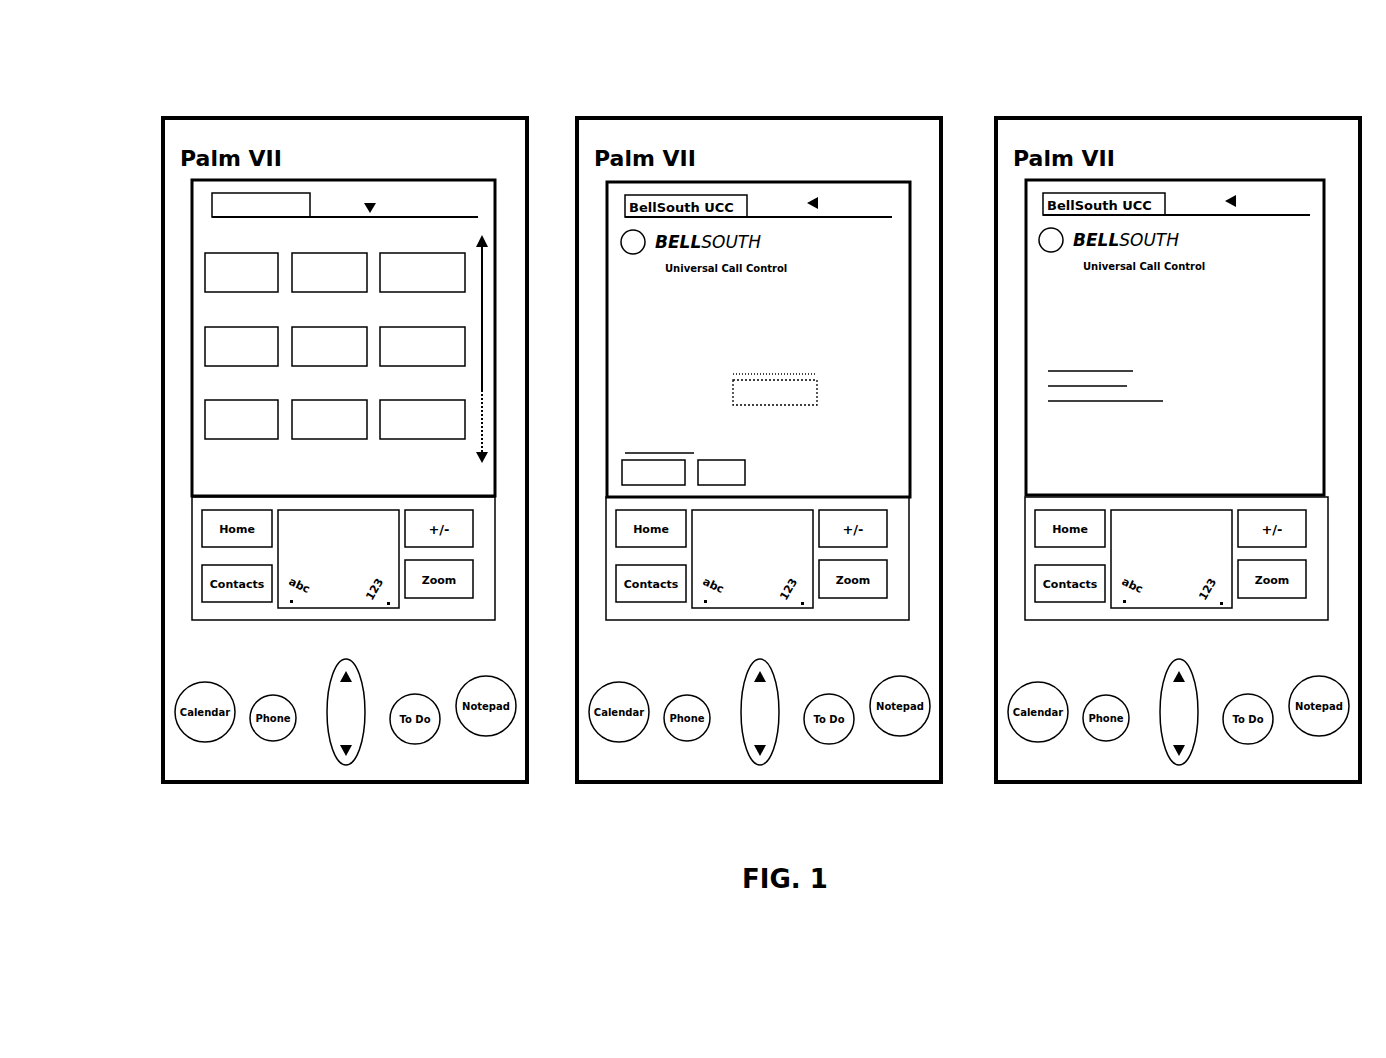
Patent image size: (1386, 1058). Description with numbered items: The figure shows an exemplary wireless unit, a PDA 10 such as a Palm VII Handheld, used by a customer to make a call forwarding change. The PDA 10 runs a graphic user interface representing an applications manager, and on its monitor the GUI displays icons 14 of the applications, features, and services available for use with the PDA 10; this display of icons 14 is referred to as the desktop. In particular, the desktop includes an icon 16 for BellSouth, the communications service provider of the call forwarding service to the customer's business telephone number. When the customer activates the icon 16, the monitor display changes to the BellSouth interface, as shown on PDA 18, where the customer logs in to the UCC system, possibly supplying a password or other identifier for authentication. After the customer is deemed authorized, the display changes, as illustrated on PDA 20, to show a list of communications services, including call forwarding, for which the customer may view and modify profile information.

The PDA 10 is at (348, 117).
The icons 14 is at (303, 284).
The icon for BellSouth 16 is at (430, 252).
The PDA 18 is at (790, 182).
The PDA 20 is at (1190, 180).